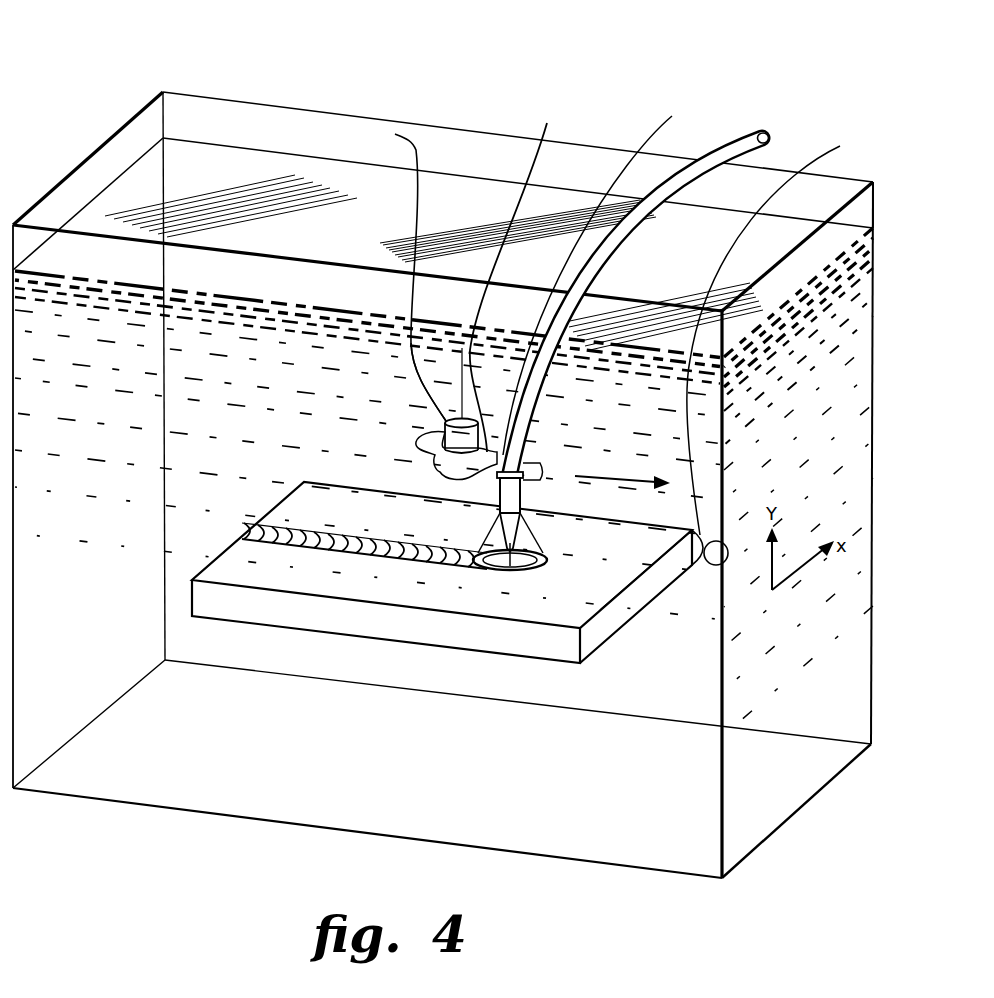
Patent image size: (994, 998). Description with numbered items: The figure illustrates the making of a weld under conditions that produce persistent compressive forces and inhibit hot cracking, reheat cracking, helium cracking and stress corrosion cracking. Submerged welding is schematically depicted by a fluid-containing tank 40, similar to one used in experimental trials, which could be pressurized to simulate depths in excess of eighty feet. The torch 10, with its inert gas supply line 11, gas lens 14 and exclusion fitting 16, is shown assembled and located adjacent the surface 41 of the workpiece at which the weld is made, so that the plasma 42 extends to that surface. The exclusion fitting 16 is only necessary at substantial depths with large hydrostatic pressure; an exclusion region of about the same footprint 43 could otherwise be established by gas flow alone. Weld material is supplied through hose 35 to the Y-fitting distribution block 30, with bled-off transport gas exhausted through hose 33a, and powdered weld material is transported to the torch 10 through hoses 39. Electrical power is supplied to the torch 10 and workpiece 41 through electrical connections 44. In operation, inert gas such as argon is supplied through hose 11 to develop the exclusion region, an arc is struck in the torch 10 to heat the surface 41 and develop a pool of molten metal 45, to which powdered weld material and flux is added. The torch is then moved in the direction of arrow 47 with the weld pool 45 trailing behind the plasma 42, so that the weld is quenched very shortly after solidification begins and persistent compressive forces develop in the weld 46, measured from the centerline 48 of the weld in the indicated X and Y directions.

The torch 10 is at (525, 447).
The inert gas supply line 11 is at (745, 132).
The gas lens 14 is at (497, 488).
The exclusion fitting 16 is at (540, 540).
The Y-fitting distribution block 30 is at (421, 388).
The hose 33a is at (418, 143).
The hose 35 is at (547, 123).
The hoses 39 is at (444, 430).
The fluid-containing tank 40 is at (100, 147).
The surface 41 is at (328, 505).
The plasma 42 is at (505, 576).
The footprint 43 is at (547, 569).
The electrical connections 44 is at (645, 132).
The weld pool 45 is at (480, 572).
The weld 46 is at (262, 522).
The arrow 47 is at (610, 470).
The centerline 48 is at (697, 587).